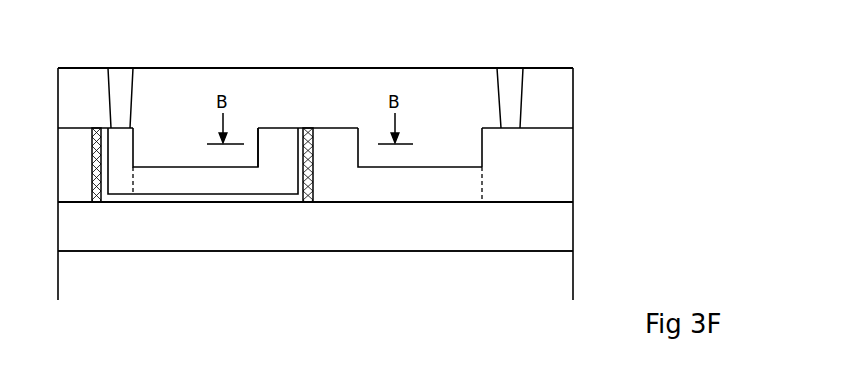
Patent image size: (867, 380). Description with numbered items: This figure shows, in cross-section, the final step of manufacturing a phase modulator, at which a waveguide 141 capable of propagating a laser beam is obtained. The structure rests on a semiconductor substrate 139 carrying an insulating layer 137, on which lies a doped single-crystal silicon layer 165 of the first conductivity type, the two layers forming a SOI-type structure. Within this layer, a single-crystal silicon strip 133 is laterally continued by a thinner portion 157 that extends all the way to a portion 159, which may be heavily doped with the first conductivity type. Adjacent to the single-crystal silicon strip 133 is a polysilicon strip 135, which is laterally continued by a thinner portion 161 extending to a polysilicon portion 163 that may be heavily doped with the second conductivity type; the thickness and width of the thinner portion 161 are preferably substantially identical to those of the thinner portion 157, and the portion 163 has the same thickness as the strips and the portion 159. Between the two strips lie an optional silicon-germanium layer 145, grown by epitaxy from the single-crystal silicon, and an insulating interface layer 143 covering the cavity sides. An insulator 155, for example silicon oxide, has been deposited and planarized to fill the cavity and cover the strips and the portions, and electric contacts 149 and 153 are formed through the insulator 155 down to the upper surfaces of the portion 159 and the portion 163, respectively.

The single-crystal silicon strip 133 is at (337, 182).
The strip 135 is at (282, 168).
The insulating layer 137 is at (553, 227).
The semiconductor substrate 139 is at (553, 277).
The waveguide 141 is at (341, 300).
The insulating interface layer 143 is at (306, 128).
The silicon-germanium layer 145 is at (309, 128).
The electric contact 149 is at (510, 82).
The electric contact 153 is at (122, 82).
The insulator 155 is at (437, 82).
The thinner portion 157 is at (420, 182).
The portion 159 is at (510, 182).
The thinner portion 161 is at (230, 182).
The portion 163 is at (123, 185).
The doped single-crystal silicon layer 165 is at (575, 163).